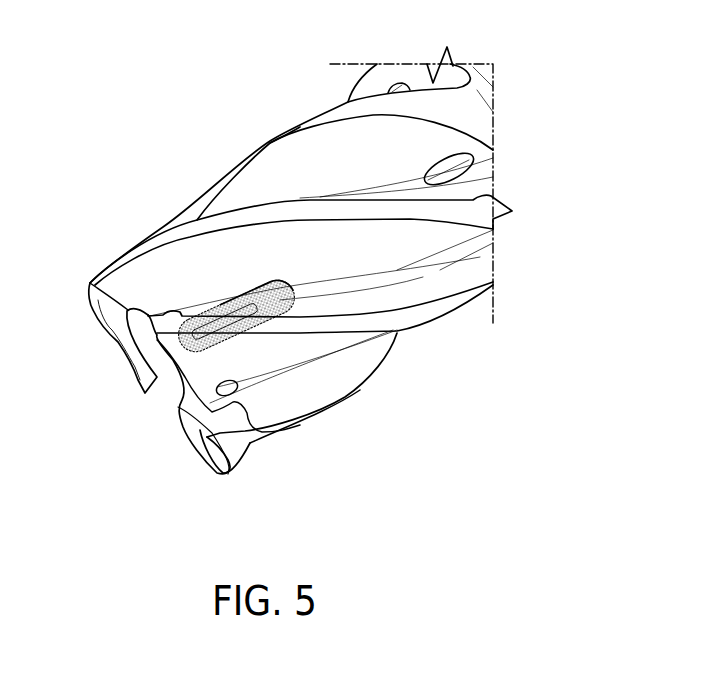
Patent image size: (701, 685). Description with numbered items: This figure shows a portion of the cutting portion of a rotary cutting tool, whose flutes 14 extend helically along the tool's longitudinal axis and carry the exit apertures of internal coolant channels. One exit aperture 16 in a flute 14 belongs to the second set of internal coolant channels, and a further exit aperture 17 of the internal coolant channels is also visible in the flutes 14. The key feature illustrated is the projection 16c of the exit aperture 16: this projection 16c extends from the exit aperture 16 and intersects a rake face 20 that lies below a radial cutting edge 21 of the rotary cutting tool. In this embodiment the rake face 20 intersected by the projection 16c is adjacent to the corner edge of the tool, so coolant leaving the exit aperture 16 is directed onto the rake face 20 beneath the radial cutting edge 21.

The flutes 14 is at (372, 264).
The exit aperture 16 is at (265, 286).
The projection 16c is at (213, 325).
The exit aperture 17 is at (473, 160).
The rake face 20 is at (247, 320).
The radial cutting edge 21 is at (188, 341).